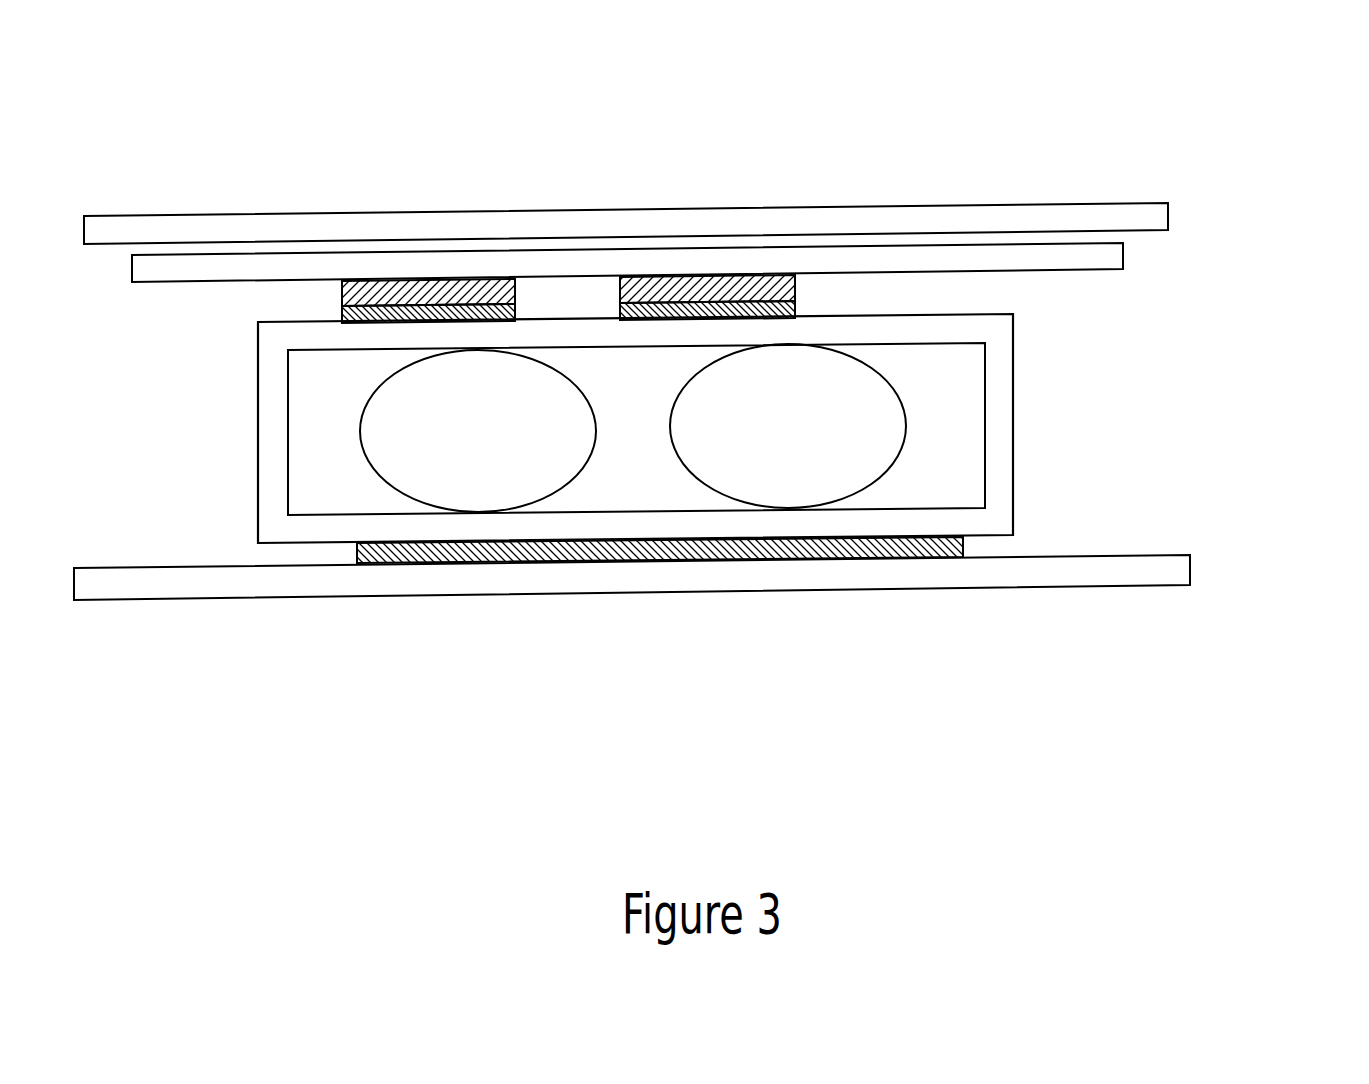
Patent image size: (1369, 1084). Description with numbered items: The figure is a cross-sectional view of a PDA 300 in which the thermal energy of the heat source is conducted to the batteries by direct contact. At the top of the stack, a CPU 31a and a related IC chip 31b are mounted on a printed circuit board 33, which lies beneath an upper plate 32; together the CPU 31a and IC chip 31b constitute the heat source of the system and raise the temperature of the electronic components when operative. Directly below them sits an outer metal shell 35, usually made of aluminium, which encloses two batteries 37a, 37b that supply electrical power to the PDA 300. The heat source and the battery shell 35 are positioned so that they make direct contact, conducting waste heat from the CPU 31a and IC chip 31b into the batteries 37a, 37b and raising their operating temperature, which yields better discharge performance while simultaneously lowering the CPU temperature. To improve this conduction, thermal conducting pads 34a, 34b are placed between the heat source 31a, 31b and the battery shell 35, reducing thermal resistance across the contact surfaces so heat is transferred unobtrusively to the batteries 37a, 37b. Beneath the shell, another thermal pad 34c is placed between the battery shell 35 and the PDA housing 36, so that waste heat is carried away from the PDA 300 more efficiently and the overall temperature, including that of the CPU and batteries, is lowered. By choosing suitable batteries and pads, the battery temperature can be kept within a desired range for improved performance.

The PDA 300 is at (1227, 677).
The CPU 31a is at (387, 282).
The related IC chip 31b is at (665, 276).
The upper substrate / cover plate 32 is at (910, 220).
The printed circuit board 33 is at (1015, 262).
The thermal conducting pad 34a is at (504, 288).
The thermal conducting pad 34b is at (783, 282).
The thermal pad 34c is at (900, 545).
The outer metal shell 35 is at (998, 460).
The PDA housing 36 is at (1098, 568).
The battery 37a is at (735, 470).
The battery 37b is at (465, 472).